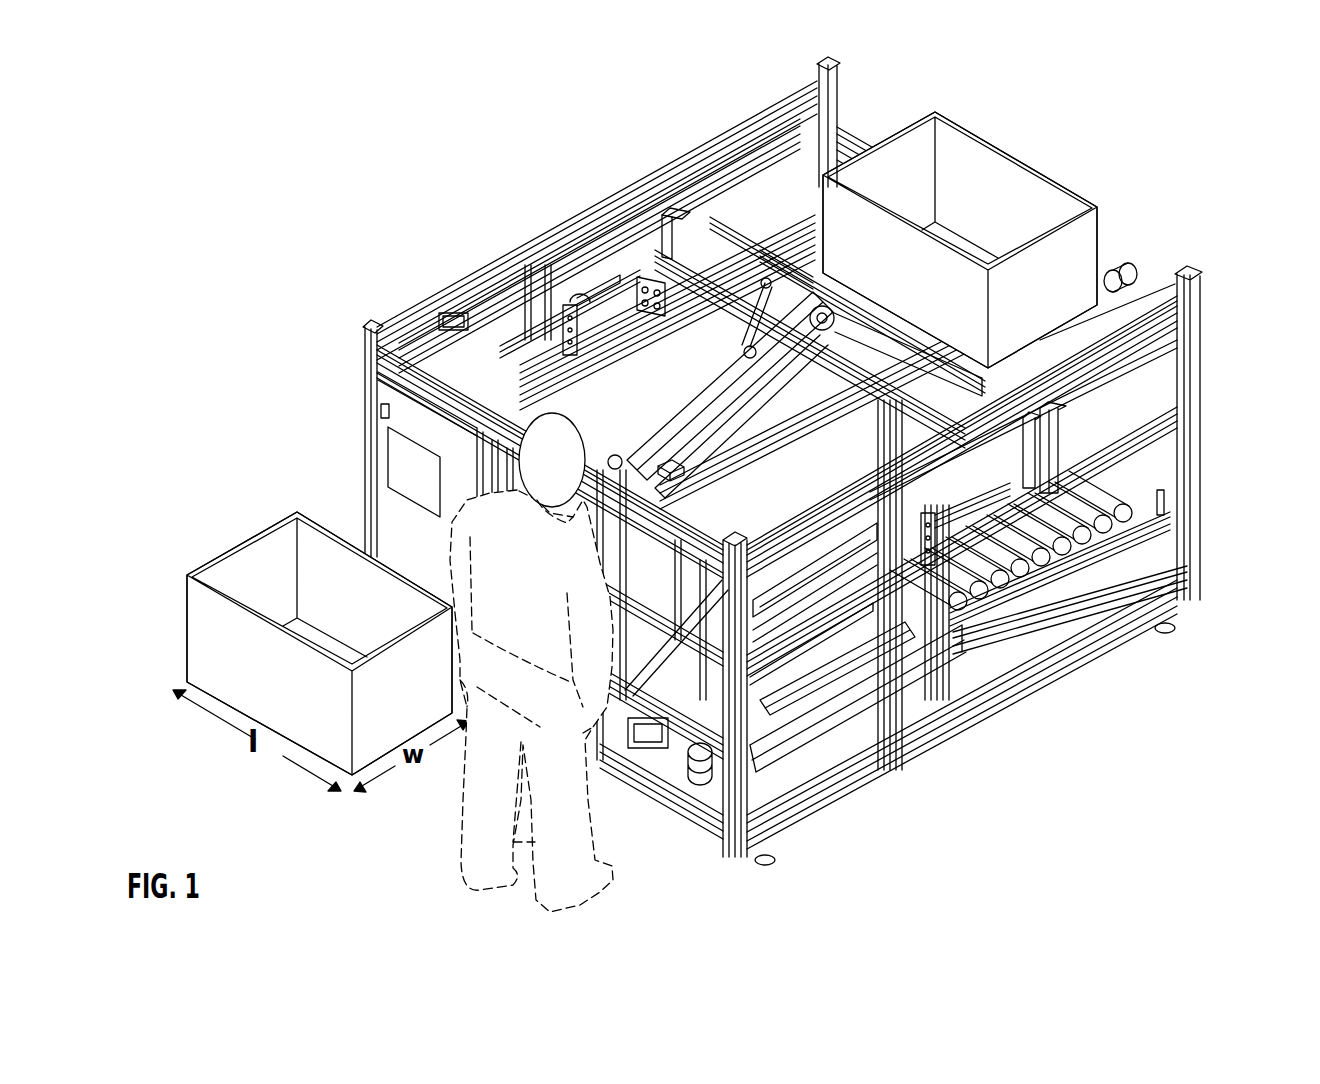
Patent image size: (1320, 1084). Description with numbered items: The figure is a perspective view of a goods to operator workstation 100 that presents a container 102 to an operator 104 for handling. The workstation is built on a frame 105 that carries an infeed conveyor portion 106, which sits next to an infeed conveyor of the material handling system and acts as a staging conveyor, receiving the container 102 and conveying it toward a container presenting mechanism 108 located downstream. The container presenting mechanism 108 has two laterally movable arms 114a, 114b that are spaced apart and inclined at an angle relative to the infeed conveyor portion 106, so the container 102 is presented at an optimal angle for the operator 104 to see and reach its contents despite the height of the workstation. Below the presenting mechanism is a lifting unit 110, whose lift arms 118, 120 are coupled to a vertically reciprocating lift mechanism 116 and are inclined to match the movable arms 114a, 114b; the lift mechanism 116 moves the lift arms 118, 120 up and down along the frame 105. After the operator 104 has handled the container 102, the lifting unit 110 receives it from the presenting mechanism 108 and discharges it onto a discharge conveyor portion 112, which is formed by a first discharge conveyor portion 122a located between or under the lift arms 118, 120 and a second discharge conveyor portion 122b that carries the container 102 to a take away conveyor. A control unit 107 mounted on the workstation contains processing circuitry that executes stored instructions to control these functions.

The goods to operator workstation 100 is at (1233, 130).
The container 102 is at (966, 147).
The operator 104 is at (568, 912).
The frame 105 is at (770, 125).
The infeed conveyor portion 106 is at (1117, 272).
The control unit 107 is at (390, 453).
The container presenting mechanism 108 is at (668, 446).
The lifting unit 110 is at (780, 723).
The discharge conveyor portion 112 is at (1079, 579).
The laterally movable arm 114a is at (700, 425).
The laterally movable arm 114b is at (880, 528).
The vertically reciprocating lift mechanism 116 is at (668, 748).
The lift arm 118 is at (818, 687).
The lift arm 120 is at (572, 452).
The first discharge conveyor portion 122a is at (840, 623).
The second discharge conveyor portion 122b is at (1038, 567).